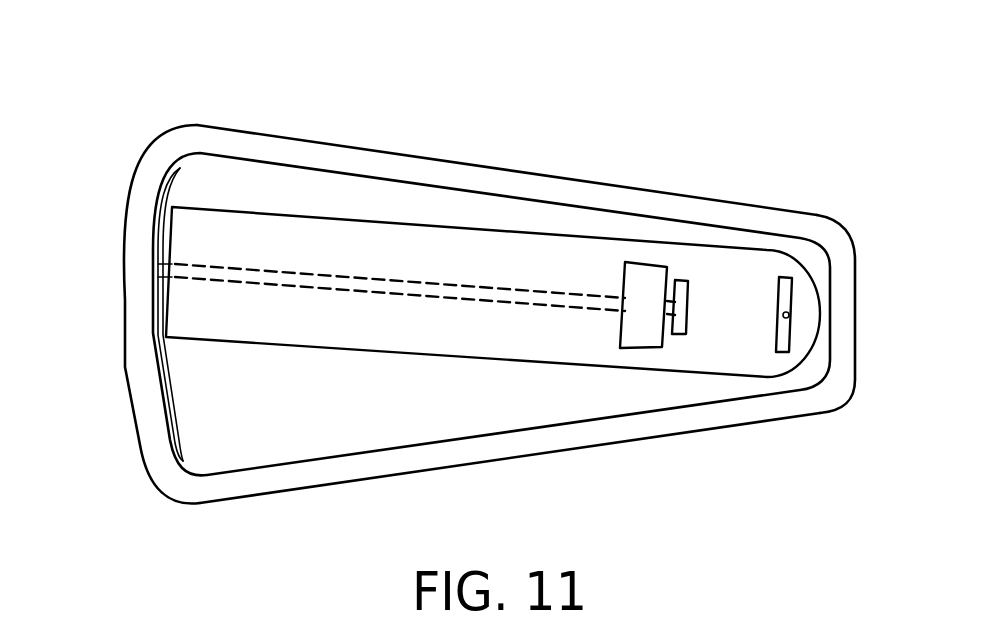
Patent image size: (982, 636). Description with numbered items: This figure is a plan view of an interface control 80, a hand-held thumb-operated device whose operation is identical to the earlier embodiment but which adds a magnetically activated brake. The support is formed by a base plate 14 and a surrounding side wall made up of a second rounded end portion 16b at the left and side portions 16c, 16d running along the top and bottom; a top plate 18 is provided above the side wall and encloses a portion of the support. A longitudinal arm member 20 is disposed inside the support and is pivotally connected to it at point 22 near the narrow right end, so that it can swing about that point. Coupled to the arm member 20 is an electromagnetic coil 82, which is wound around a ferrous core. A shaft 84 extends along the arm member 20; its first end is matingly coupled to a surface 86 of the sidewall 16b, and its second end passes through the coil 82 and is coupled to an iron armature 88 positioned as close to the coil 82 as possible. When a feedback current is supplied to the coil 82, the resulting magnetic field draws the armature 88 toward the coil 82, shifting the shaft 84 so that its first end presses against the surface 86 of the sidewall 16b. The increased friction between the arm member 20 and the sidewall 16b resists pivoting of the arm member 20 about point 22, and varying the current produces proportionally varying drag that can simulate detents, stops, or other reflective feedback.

The interface control 80 is at (530, 88).
The top plate 18 is at (490, 163).
The side portion 16c is at (612, 198).
The second rounded end portion 16b is at (135, 303).
The side portion 16d is at (518, 442).
The base plate 14 is at (303, 435).
The surface 86 is at (165, 398).
The longitudinal arm member 20 is at (338, 333).
The shaft 84 is at (405, 285).
The electromagnetic coil 82 is at (640, 338).
The iron armature 88 is at (685, 308).
The point 22 is at (777, 317).